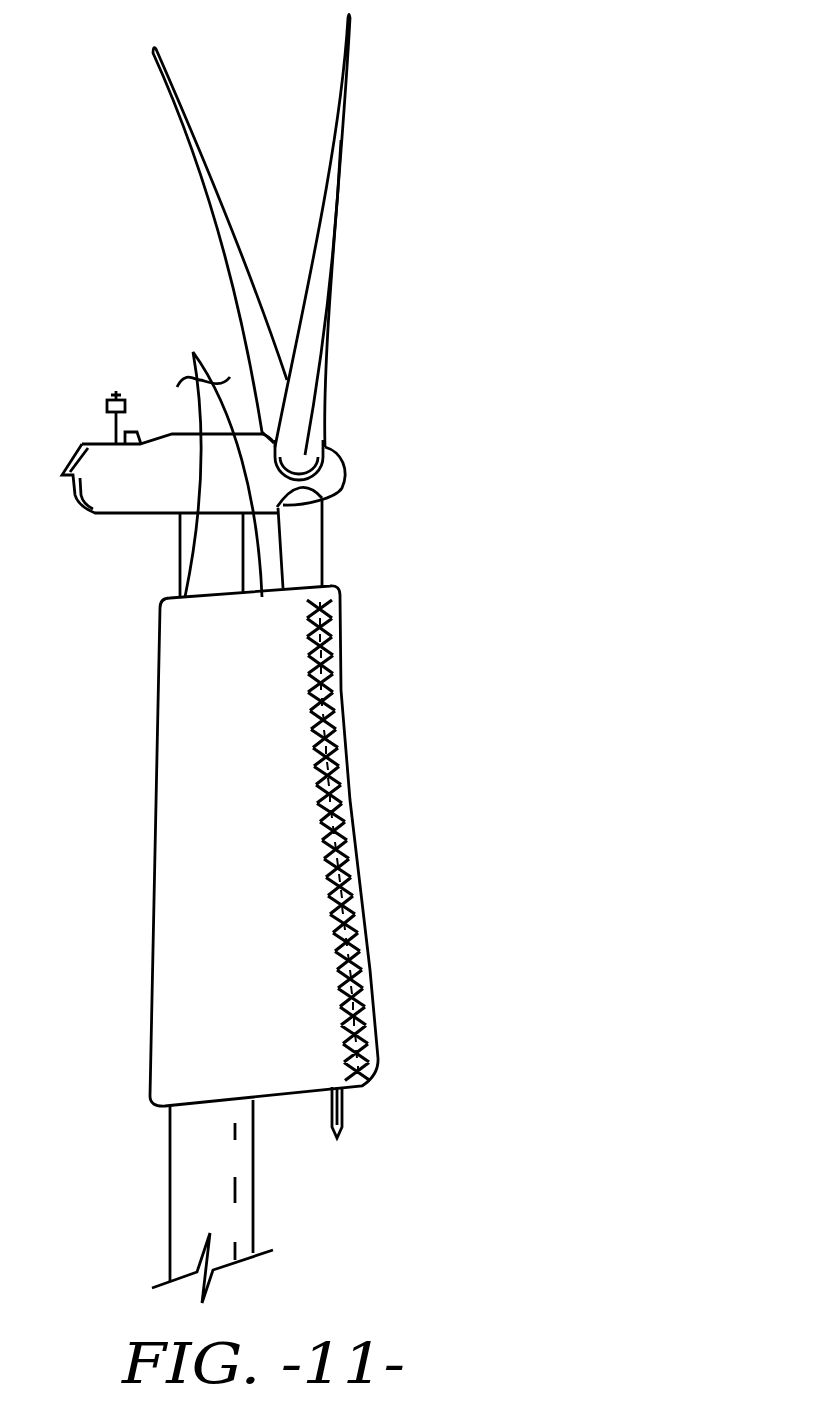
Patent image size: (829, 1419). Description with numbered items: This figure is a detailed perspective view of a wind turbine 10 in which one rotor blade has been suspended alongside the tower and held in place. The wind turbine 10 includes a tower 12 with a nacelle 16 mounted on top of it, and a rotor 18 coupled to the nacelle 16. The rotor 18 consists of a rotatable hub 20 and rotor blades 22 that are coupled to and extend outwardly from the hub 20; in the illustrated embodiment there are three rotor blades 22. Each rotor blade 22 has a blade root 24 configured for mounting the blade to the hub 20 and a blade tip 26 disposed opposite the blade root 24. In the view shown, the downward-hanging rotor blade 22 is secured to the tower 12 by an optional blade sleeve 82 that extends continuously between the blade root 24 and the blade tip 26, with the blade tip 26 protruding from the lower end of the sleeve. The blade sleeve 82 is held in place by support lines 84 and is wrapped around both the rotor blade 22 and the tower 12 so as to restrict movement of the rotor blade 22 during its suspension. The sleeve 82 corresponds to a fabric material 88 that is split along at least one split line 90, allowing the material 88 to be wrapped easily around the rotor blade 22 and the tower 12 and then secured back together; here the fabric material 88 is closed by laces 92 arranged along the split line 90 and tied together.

The wind turbine 10 is at (464, 184).
The tower 12 is at (178, 545).
The nacelle 16 is at (112, 514).
The rotor 18 is at (284, 604).
The rotatable hub 20 is at (342, 467).
The rotor blade 22 is at (275, 604).
The blade root 24 is at (303, 523).
The blade tip 26 is at (342, 1100).
The blade sleeve 82 is at (261, 846).
The support lines 84 is at (197, 408).
The fabric material 88 is at (192, 803).
The split line 90 is at (350, 950).
The laces 92 is at (345, 862).